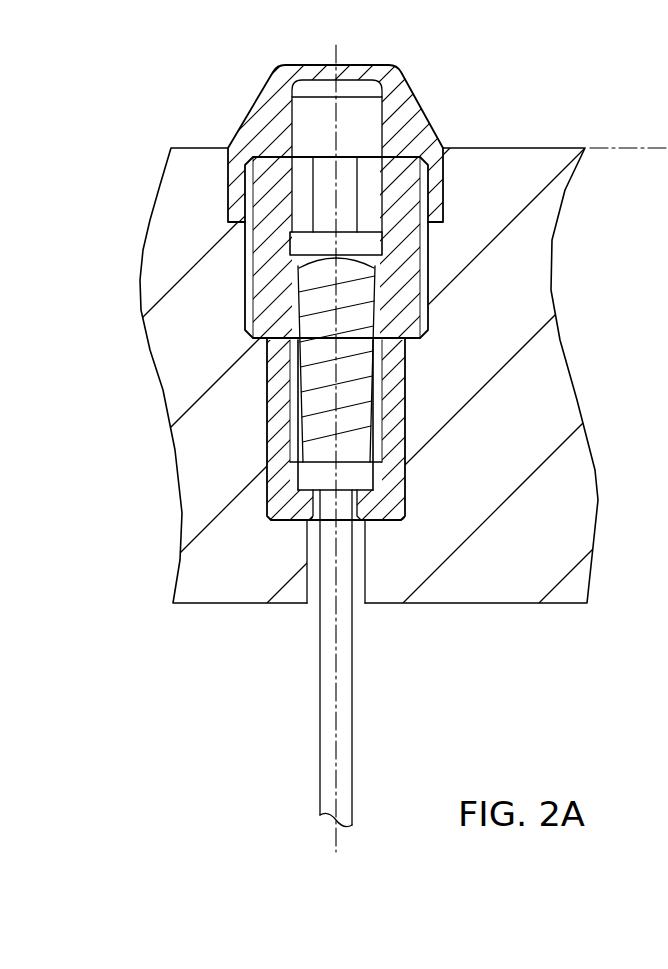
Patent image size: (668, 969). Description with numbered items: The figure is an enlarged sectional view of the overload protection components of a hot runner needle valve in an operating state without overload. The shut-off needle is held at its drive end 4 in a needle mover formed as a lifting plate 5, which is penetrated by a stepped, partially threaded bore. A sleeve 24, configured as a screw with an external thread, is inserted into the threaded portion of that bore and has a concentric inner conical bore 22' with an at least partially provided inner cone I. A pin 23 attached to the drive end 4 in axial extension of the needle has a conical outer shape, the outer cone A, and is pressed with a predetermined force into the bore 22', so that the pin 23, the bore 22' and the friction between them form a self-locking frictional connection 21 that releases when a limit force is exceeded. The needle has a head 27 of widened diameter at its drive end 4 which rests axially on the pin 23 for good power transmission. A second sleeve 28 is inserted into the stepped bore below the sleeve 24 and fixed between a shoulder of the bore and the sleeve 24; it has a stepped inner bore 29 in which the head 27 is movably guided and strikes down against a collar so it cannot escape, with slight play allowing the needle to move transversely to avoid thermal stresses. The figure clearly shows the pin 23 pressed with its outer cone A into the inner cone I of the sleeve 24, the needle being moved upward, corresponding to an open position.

The drive end 4 is at (328, 672).
The lifting plate 5 is at (568, 590).
The frictional connection 21 is at (378, 279).
The conical bore 22' is at (463, 359).
The pin 23 is at (322, 268).
The sleeve 24 is at (270, 182).
The head 27 is at (347, 475).
The second sleeve 28 is at (378, 405).
The stepped inner bore 29 is at (293, 442).
The outer cone A is at (372, 268).
The inner cone I is at (380, 262).